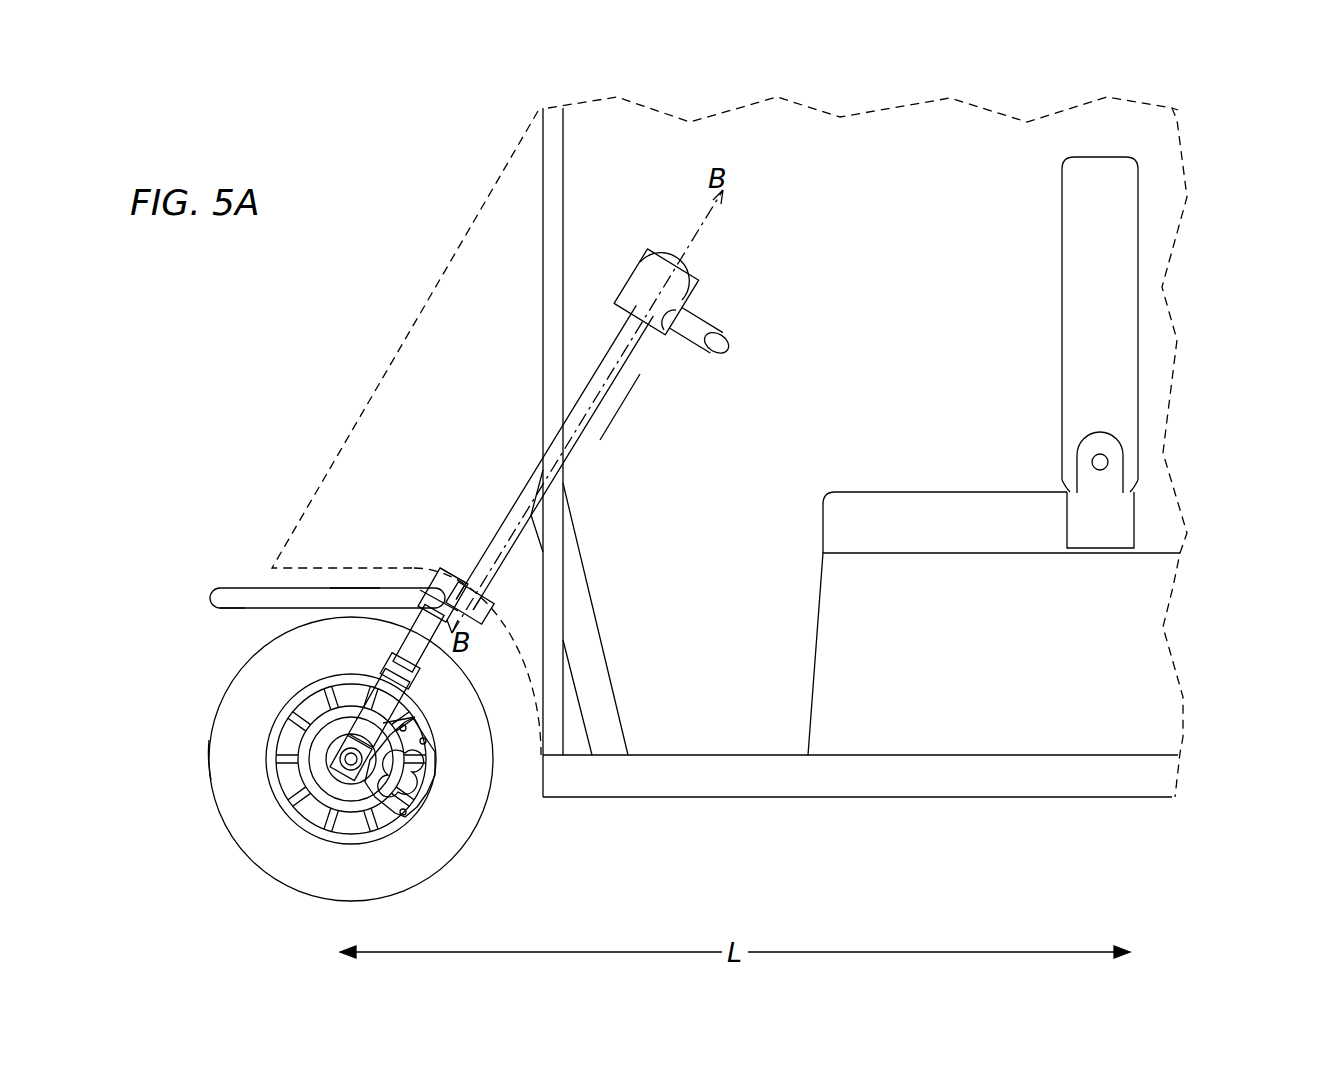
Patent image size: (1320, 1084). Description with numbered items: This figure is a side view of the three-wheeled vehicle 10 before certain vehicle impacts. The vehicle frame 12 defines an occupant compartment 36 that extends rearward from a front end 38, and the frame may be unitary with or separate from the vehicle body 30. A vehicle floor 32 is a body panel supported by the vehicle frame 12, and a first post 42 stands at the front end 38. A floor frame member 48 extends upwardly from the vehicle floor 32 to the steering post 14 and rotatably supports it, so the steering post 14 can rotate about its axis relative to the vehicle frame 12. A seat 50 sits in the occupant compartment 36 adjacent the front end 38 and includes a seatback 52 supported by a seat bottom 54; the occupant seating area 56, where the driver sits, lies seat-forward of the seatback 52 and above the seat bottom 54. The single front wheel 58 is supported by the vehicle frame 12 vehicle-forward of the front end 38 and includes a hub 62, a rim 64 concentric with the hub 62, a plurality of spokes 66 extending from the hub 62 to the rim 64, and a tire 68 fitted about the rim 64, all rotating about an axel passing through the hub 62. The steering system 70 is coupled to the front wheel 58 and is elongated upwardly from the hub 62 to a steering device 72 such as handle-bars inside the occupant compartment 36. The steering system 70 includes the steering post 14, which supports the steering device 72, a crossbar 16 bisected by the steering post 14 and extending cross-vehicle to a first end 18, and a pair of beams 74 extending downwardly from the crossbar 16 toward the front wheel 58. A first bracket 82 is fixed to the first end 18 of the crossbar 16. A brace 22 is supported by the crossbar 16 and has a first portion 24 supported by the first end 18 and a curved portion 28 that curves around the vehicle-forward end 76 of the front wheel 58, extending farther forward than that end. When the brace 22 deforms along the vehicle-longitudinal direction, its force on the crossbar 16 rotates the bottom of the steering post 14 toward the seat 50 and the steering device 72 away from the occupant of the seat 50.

The three-wheeled vehicle 10 is at (1238, 120).
The vehicle frame 12 is at (566, 198).
The steering post 14 is at (630, 350).
The crossbar 16 is at (492, 603).
The first end 18 is at (467, 555).
The brace 22 is at (232, 583).
The first portion 24 is at (355, 587).
The curved portion 28 is at (228, 611).
The vehicle body 30 is at (388, 360).
The vehicle floor 32 is at (716, 776).
The occupant compartment 36 is at (841, 165).
The front end 38 is at (522, 800).
The first post 42 is at (566, 549).
The floor frame member 48 is at (600, 680).
The seat 50 is at (901, 488).
The seatback 52 is at (1082, 258).
The seat bottom 54 is at (962, 518).
The occupant seating area 56 is at (950, 332).
The front wheel 58 is at (243, 874).
The hub 62 is at (330, 770).
The rim 64 is at (299, 701).
The spokes 66 is at (326, 690).
The tire 68 is at (232, 717).
The steering system 70 is at (613, 402).
The steering device 72 is at (681, 262).
The beams 74 is at (400, 664).
The vehicle-forward end 76 is at (206, 762).
The first bracket 82 is at (443, 586).